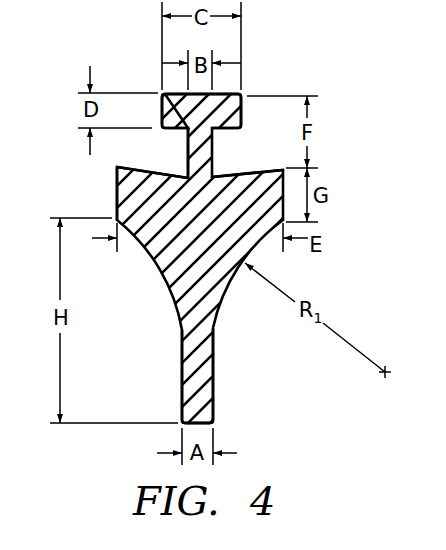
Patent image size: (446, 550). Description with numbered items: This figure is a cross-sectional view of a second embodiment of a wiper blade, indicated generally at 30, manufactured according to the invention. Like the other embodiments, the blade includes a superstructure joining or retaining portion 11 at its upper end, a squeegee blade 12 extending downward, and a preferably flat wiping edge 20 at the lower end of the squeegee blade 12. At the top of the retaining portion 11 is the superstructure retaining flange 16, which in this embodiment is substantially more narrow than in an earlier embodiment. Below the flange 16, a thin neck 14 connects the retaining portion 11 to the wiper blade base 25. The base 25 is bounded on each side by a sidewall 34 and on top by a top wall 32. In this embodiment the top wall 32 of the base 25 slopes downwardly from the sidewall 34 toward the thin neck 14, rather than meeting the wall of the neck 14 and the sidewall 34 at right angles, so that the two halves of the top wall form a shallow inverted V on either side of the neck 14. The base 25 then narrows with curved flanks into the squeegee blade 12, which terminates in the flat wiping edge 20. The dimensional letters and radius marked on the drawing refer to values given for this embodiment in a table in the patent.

The wiper blade embodiment 30 is at (330, 139).
The superstructure joining or retaining portion 11 is at (247, 105).
The superstructure retaining flange 16 is at (163, 100).
The thin neck 14 is at (188, 162).
The top wall 32 is at (238, 170).
The sidewall 34 is at (117, 170).
The wiper blade base 25 is at (117, 198).
The squeegee blade 12 is at (213, 350).
The wiping edge 20 is at (200, 425).